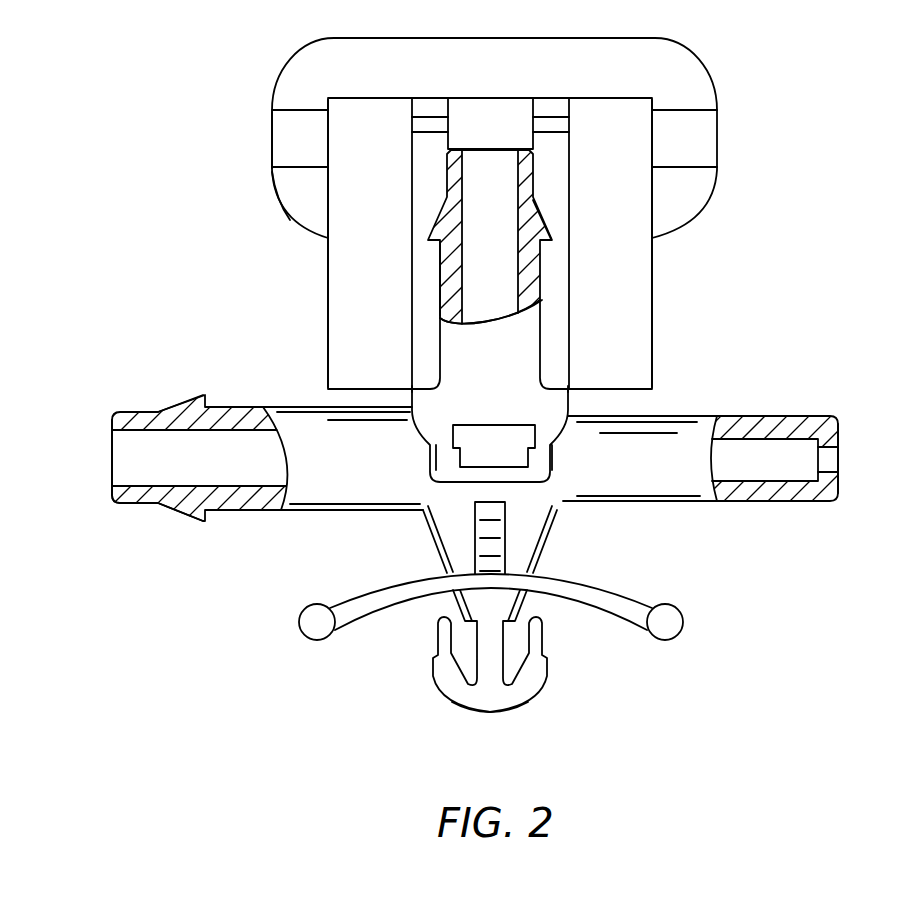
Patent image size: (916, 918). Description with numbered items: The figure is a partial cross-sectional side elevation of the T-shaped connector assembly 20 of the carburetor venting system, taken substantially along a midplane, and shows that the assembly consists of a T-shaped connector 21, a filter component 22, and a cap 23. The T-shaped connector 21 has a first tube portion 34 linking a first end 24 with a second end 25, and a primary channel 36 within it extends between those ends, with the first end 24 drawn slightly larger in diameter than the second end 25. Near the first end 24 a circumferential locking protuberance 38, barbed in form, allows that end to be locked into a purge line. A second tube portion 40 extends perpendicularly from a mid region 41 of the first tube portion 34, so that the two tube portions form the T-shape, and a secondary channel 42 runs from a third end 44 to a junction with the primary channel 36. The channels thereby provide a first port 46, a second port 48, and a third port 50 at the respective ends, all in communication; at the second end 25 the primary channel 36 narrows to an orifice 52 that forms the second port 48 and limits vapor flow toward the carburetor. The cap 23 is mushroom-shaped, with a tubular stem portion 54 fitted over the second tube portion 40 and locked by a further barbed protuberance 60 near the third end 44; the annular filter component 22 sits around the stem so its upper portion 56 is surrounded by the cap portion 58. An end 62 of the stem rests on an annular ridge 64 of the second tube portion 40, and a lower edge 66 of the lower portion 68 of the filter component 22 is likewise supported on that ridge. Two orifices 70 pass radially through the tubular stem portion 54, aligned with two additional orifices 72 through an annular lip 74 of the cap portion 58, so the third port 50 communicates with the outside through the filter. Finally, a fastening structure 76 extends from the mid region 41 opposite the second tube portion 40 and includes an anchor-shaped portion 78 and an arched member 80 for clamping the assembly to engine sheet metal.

The T-shaped connector assembly 20 is at (208, 672).
The T-shaped connector 21 is at (650, 502).
The filter component 22 is at (358, 187).
The cap 23 is at (283, 64).
The first end 24 is at (112, 495).
The second end 25 is at (840, 497).
The first tube portion 34 is at (254, 407).
The primary channel 36 is at (191, 472).
The circumferential locking protuberance 38 is at (198, 520).
The second tube portion 40 is at (476, 354).
The mid region 41 is at (404, 528).
The secondary channel 42 is at (476, 199).
The third end 44 is at (465, 149).
The first port 46 is at (112, 455).
The second port 48 is at (840, 469).
The third port 50 is at (513, 149).
The orifice 52 is at (840, 445).
The tubular stem portion 54 is at (418, 284).
The upper portion 56 is at (374, 103).
The cap portion 58 is at (282, 179).
The circumferential locking protuberance 60 is at (553, 231).
The end of the tubular stem portion 62 is at (436, 384).
The annular ridge 64 is at (413, 393).
The lower edge 66 is at (412, 390).
The lower portion 68 is at (328, 342).
The orifices 70 is at (432, 117).
The additional orifices 72 is at (313, 108).
The annular lip 74 is at (286, 211).
The fastening structure 76 is at (536, 686).
The anchor-shaped portion 78 is at (502, 713).
The arched member 80 is at (597, 605).